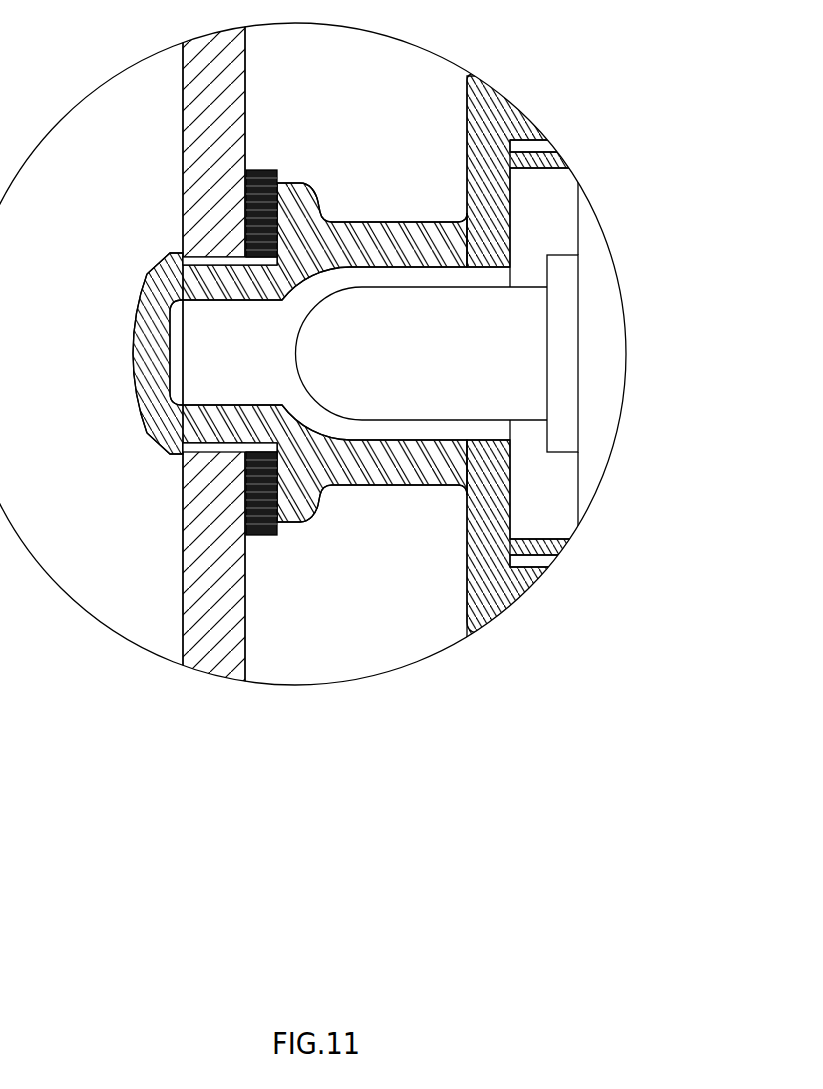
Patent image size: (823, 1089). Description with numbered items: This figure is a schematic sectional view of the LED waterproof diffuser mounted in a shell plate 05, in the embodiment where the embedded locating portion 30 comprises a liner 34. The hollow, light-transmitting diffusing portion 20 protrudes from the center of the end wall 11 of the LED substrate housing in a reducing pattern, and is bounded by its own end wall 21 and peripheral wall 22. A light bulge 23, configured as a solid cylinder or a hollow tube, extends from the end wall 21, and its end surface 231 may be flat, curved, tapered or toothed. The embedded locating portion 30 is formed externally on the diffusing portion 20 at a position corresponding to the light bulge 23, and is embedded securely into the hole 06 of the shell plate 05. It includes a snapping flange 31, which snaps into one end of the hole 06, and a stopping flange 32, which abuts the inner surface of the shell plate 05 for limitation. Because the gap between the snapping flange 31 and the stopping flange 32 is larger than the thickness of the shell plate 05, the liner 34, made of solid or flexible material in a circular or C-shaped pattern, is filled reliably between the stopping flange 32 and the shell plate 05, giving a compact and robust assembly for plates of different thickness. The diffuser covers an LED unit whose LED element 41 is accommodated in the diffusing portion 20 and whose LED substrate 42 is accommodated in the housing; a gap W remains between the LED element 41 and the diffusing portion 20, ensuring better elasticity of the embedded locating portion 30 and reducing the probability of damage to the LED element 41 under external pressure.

The shell plate 05 is at (152, 111).
The hole 06 is at (160, 270).
The end wall 11 is at (490, 202).
The diffusing portion 20 is at (439, 397).
The end wall 21 is at (503, 412).
The peripheral wall 22 is at (393, 453).
The light bulge 23 is at (114, 393).
The end surface 231 is at (130, 346).
The embedded locating portion 30 is at (168, 295).
The snapping flange 31 is at (183, 257).
The stopping flange 32 is at (292, 182).
The liner 34 is at (262, 535).
The LED element 41 is at (470, 478).
The LED substrate 42 is at (598, 440).
The gap W is at (437, 282).